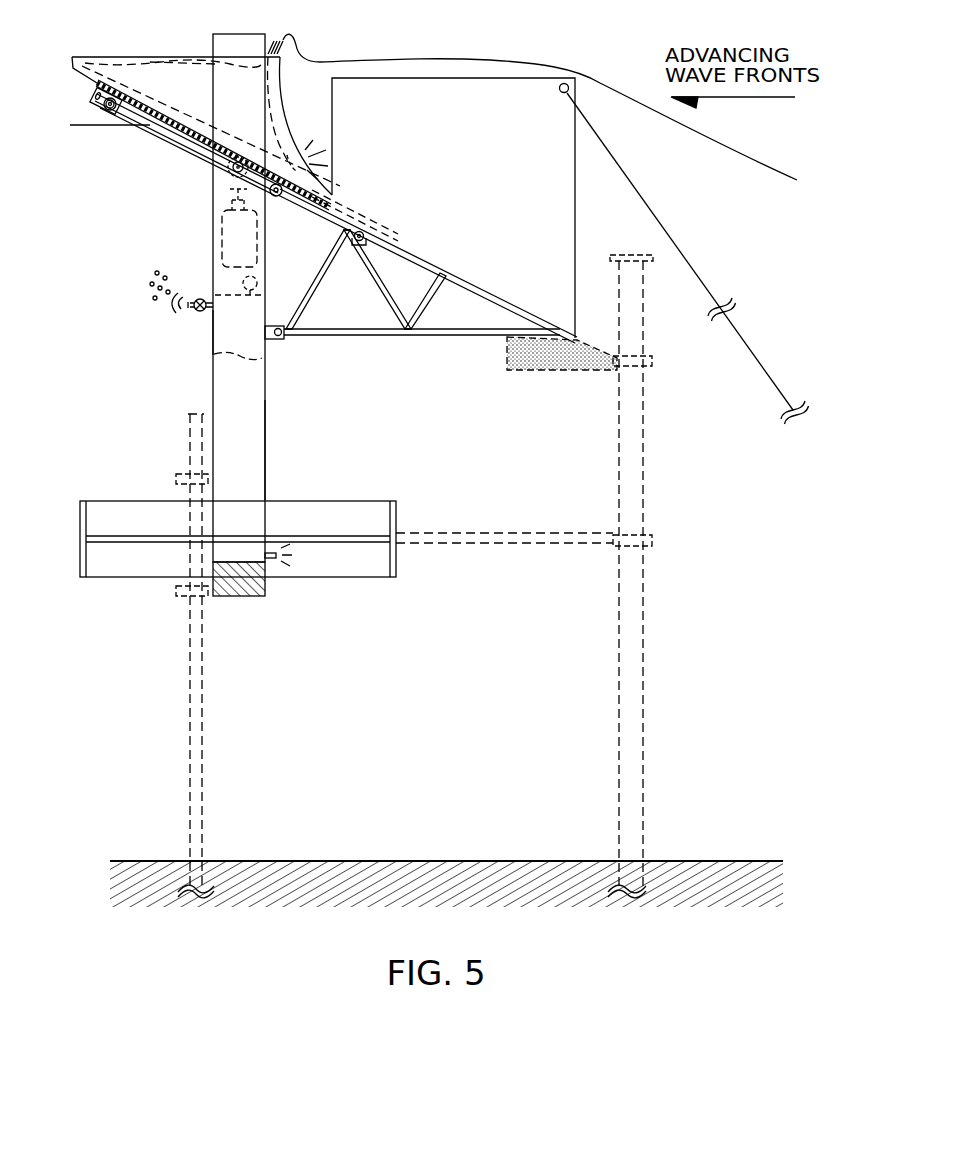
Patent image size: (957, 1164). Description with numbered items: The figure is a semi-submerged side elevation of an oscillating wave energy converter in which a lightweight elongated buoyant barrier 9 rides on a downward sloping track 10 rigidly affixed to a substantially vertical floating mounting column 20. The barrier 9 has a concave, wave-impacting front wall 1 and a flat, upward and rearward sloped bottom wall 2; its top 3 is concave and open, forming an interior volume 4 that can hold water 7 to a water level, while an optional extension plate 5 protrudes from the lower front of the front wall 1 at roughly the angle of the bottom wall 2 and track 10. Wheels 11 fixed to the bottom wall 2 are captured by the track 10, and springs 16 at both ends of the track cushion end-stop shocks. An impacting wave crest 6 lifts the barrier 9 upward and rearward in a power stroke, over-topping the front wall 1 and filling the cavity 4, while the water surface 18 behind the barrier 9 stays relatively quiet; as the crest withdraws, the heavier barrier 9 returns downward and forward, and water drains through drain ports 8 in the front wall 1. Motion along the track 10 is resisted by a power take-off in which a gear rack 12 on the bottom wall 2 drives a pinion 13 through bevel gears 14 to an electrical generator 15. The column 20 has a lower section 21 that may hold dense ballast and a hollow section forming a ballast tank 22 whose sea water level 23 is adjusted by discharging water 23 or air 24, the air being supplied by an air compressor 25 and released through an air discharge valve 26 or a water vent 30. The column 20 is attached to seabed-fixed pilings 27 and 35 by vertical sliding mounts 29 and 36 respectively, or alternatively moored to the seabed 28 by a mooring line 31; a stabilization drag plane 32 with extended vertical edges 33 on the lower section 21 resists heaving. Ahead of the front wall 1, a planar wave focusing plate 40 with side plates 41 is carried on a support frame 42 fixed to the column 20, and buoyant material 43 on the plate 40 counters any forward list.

The front wall 1 is at (286, 116).
The sloped bottom wall 2 is at (153, 105).
The top 3 is at (152, 56).
The open vessel interior volume 4 is at (181, 63).
The extension plate 5 is at (368, 228).
The wave crest 6 is at (289, 41).
The water 7 is at (118, 57).
The drain ports 8 is at (308, 156).
The elongated buoyant barrier 9 is at (180, 108).
The track 10 is at (157, 140).
The wheels 11 is at (110, 110).
The gear rack 12 is at (190, 140).
The pinion 13 is at (228, 168).
The bevel gears 14 is at (232, 181).
The electrical generator 15 is at (222, 240).
The springs 16 is at (94, 97).
The water surface 18 is at (125, 126).
The mounting column 20 is at (212, 401).
The lower section 21 is at (250, 597).
The ballast tank 22 is at (246, 447).
The water ballast level 23 is at (262, 359).
The air 24 is at (222, 332).
The air compressor 25 is at (258, 280).
The air discharge valve 26 is at (200, 299).
The piling 27 is at (188, 714).
The seabed 28 is at (393, 860).
The vertical sliding mounts 29 is at (173, 478).
The water vent 30 is at (277, 561).
The mooring line 31 is at (757, 360).
The stabilization drag plane 32 is at (354, 539).
The extended vertical edges 33 is at (88, 513).
The piling 35 is at (645, 690).
The vertical sliding mounts 36 is at (654, 362).
The wave focusing plate 40 is at (456, 272).
The side plates 41 is at (577, 218).
The support frame 42 is at (352, 320).
The buoyant material 43 is at (555, 360).